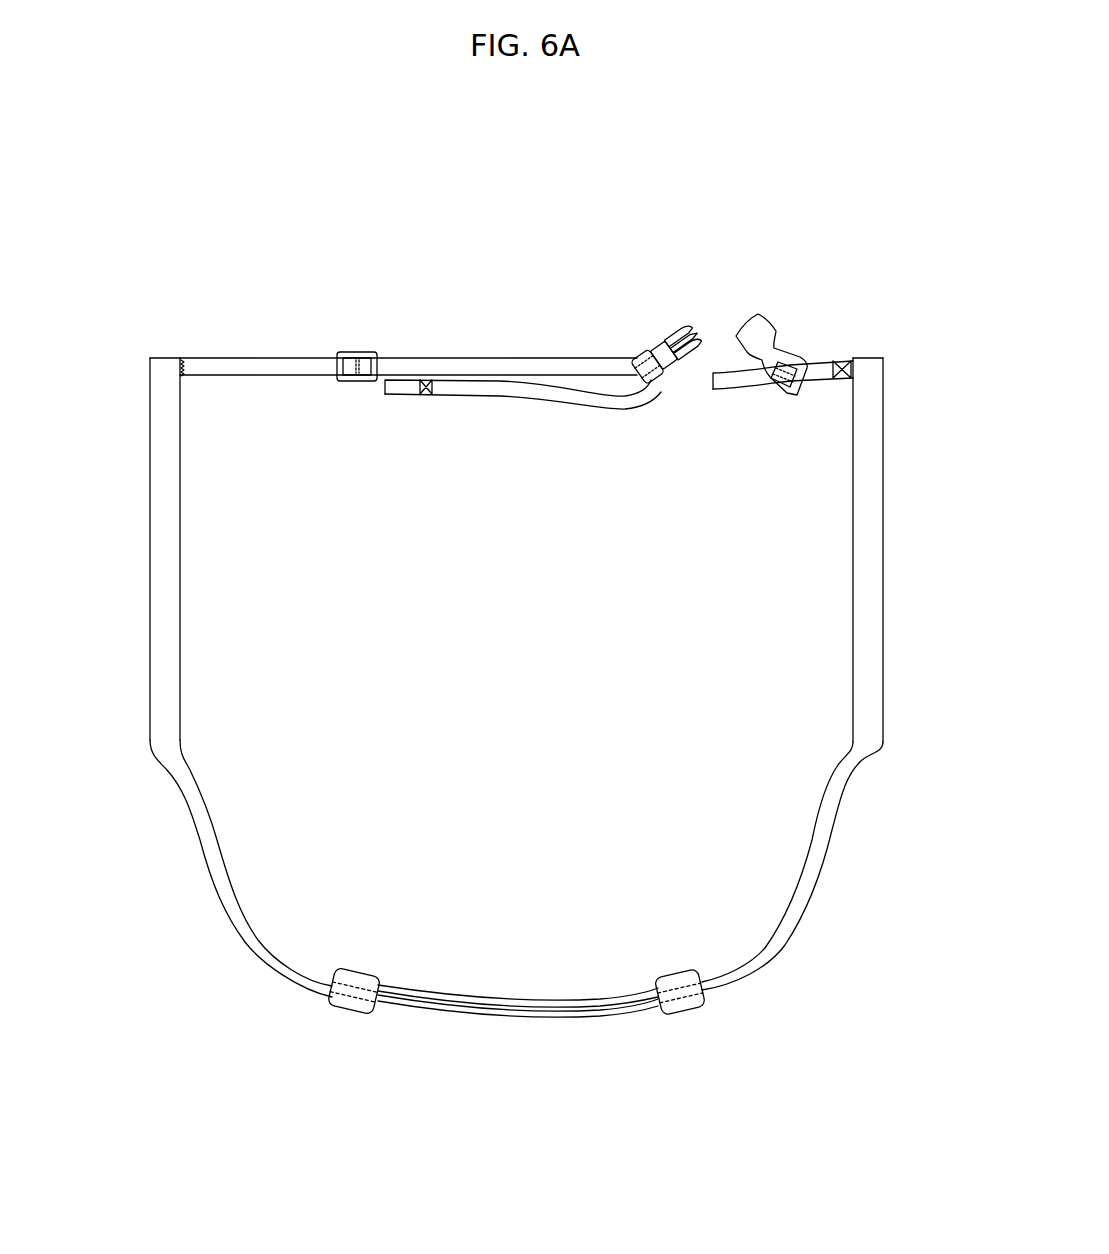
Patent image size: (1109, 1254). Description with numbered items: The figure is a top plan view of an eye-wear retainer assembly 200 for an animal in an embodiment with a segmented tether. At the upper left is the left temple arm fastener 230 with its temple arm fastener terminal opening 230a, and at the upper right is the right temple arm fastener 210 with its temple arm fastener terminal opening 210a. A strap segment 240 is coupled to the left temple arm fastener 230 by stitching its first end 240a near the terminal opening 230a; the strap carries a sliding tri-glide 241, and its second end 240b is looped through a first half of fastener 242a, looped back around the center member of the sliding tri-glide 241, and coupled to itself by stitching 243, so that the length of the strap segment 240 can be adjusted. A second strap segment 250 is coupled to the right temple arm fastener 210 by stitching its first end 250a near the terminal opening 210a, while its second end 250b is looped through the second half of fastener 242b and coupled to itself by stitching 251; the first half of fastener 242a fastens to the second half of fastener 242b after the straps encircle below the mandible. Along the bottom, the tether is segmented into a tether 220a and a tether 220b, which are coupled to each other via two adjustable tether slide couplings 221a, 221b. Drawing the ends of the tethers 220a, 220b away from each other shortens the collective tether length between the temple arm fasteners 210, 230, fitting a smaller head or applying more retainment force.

The eye-wear retainer assembly 200 is at (203, 877).
The right temple arm fastener 210 is at (858, 572).
The temple arm fastener terminal opening 210a is at (870, 357).
The tether 220a is at (803, 892).
The tether 220b is at (213, 863).
The tether slide coupling 221a is at (670, 1003).
The tether slide coupling 221b is at (350, 985).
The left temple arm fastener 230 is at (165, 590).
The temple arm fastener terminal opening 230a is at (167, 360).
The strap segment 240 is at (260, 363).
The first end of strap segment 240a is at (188, 370).
The second end of strap segment 240b is at (393, 389).
The sliding tri-glide 241 is at (350, 352).
The first half of fastener 242a is at (678, 328).
The second half of fastener 242b is at (772, 345).
The stitching 243 is at (421, 391).
The strap segment 250 is at (827, 362).
The first end of strap segment 250a is at (843, 380).
The second end of strap segment 250b is at (717, 378).
The stitching 251 is at (838, 375).